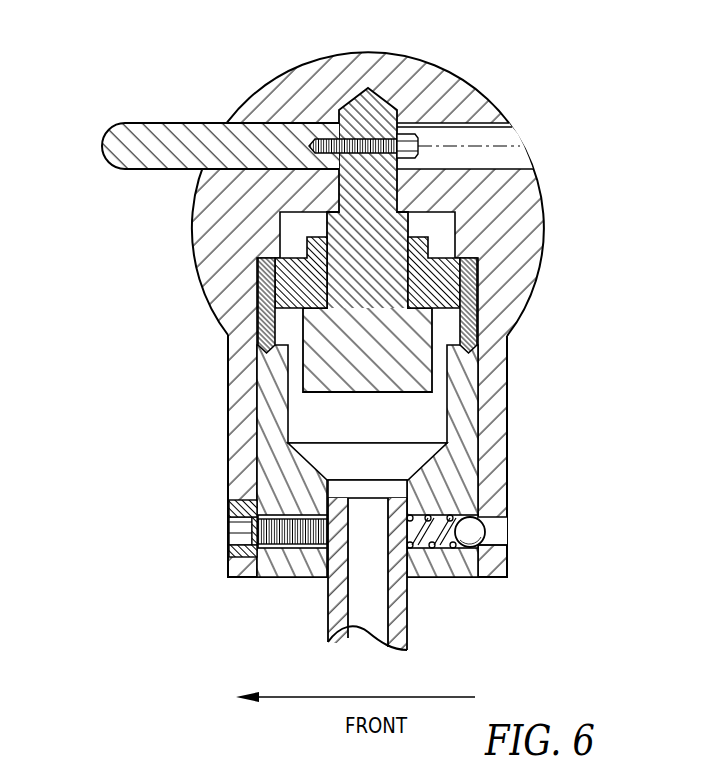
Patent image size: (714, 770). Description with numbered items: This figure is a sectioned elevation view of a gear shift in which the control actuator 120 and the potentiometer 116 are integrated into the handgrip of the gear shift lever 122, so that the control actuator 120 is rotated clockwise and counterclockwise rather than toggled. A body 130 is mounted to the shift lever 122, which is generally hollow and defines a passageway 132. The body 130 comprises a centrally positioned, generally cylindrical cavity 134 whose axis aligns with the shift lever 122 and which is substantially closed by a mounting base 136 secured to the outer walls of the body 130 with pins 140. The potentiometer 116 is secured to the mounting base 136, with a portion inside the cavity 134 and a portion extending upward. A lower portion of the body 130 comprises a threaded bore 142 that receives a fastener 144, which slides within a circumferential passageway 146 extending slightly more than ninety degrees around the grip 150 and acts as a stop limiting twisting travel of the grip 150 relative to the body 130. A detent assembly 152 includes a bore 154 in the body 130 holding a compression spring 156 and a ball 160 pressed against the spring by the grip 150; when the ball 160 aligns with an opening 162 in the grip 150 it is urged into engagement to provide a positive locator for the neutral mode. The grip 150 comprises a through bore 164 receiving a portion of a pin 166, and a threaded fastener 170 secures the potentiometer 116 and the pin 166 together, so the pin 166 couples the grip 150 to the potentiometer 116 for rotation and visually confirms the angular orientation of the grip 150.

The potentiometer 116 is at (318, 362).
The control actuator 120 is at (582, 218).
The gear shift lever 122 is at (338, 586).
The body 130 is at (278, 478).
The passageway 132 is at (345, 620).
The cavity 134 is at (435, 425).
The mounting base 136 is at (458, 245).
The pins 140 is at (268, 318).
The threaded bore 142 is at (270, 516).
The fastener 144 is at (233, 540).
The circumferential passageway 146 is at (245, 563).
The grip 150 is at (198, 222).
The detent assembly 152 is at (486, 532).
The bore 154 is at (422, 556).
The compression spring 156 is at (432, 560).
The ball 160 is at (495, 545).
The opening 162 is at (498, 523).
The through bore 164 is at (498, 126).
The pin 166 is at (100, 148).
The threaded fastener 170 is at (410, 132).